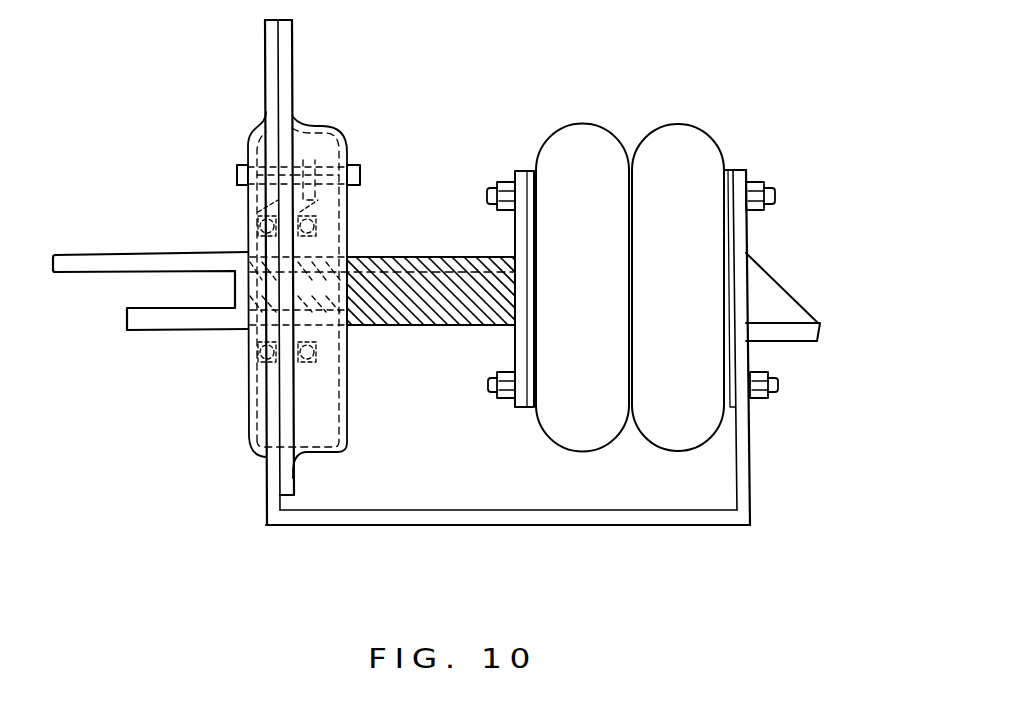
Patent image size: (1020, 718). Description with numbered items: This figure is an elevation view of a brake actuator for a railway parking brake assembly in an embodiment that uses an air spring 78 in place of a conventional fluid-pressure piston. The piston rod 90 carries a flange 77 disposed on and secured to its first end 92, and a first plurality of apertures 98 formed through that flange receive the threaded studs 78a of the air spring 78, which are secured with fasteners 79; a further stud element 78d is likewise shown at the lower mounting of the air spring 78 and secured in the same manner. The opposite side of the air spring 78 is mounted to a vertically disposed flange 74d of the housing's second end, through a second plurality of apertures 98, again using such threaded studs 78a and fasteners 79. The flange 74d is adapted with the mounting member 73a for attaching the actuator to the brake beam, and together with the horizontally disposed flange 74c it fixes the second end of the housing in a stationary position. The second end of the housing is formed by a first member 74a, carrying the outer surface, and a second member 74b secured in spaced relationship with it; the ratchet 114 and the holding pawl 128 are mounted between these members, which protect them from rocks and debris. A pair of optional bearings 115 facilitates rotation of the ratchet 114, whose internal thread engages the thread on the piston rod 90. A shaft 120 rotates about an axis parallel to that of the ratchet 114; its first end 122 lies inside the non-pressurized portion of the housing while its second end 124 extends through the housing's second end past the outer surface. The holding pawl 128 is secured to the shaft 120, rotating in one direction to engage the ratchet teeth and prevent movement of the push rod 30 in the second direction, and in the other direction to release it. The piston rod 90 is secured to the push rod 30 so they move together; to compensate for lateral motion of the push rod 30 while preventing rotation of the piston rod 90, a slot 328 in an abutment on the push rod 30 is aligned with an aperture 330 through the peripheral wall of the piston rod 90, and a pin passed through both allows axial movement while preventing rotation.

The push rod 30 is at (114, 254).
The mounting member 73a is at (795, 322).
The first member 74a is at (265, 61).
The second member 74b is at (295, 47).
The horizontally disposed flange 74c is at (493, 526).
The vertically disposed flange 74d is at (742, 237).
The flange 77 is at (523, 330).
The air spring 78 is at (652, 140).
The threaded studs 78a is at (487, 196).
The bolt 78d is at (481, 388).
The fasteners 79 is at (498, 185).
The piston rod 90 is at (437, 331).
The first end of the piston rod 92 is at (500, 257).
The apertures 98 is at (525, 171).
The ratchet 114 is at (252, 210).
The bearings 115 is at (243, 372).
The shaft 120 is at (248, 140).
The first end of the shaft 122 is at (360, 175).
The second end of the shaft 124 is at (237, 175).
The holding pawl 128 is at (350, 142).
The slot 328 is at (340, 248).
The aperture 330 is at (336, 326).